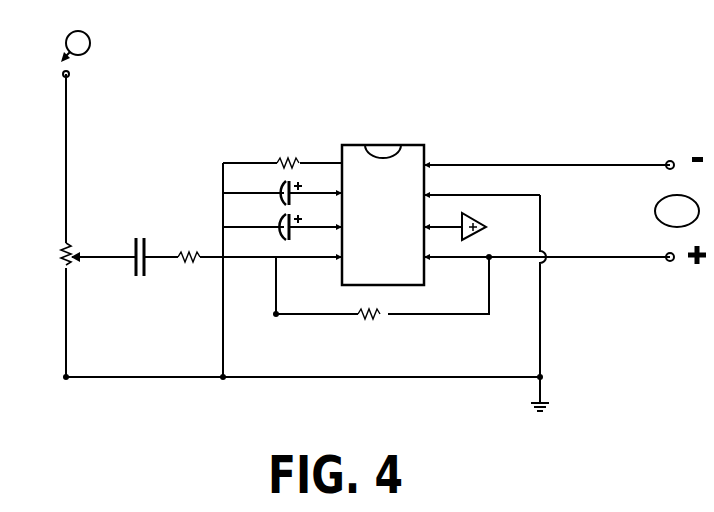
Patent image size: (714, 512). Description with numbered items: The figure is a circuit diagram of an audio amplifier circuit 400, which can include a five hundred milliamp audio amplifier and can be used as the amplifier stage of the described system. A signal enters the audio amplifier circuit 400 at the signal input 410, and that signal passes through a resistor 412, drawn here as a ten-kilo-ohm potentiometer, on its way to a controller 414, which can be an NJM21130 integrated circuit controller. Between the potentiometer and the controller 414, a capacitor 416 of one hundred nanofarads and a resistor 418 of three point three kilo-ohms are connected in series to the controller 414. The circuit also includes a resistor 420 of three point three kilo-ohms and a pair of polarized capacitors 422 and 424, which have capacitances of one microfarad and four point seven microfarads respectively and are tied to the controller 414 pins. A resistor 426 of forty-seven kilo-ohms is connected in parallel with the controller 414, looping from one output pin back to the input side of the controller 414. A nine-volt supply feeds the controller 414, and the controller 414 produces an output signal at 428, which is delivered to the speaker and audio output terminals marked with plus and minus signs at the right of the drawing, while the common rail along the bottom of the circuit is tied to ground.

The audio amplifier circuit 400 is at (476, 108).
The signal input 410 is at (90, 48).
The resistor 412 is at (62, 252).
The controller 414 is at (346, 145).
The capacitor 416 is at (148, 268).
The resistor 418 is at (180, 252).
The resistor 420 is at (276, 161).
The polarized capacitor 422 is at (284, 242).
The polarized capacitor 424 is at (280, 186).
The resistor 426 is at (390, 314).
The output signal 428 is at (666, 234).